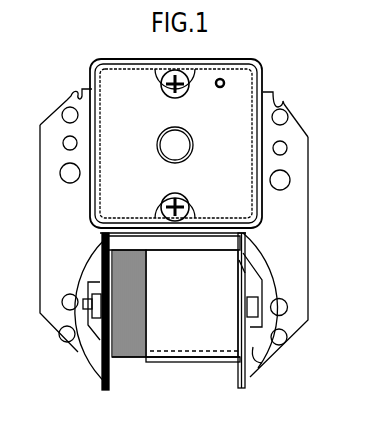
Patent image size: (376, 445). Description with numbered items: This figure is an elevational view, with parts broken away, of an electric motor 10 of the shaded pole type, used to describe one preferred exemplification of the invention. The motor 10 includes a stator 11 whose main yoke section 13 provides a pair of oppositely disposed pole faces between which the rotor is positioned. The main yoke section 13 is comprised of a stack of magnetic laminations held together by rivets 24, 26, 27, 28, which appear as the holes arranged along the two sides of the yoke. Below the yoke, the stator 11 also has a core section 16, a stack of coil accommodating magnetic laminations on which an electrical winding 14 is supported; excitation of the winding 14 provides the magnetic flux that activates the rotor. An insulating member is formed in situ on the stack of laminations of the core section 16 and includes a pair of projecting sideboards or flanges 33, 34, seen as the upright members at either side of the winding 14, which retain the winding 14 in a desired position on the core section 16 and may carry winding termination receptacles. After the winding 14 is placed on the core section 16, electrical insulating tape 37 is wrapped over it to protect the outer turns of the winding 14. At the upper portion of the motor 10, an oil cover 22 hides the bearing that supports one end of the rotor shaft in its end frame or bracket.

The electric motor 10 is at (49, 402).
The stator 11 is at (308, 203).
The main yoke section 13 is at (300, 143).
The electrical winding 14 is at (132, 362).
The core section 16 is at (255, 348).
The oil cover 22 is at (247, 76).
The rivet 24 is at (67, 109).
The rivet 26 is at (281, 117).
The rivet 27 is at (66, 335).
The rivet 28 is at (283, 337).
The flange 33 is at (106, 390).
The flange 34 is at (246, 390).
The electrical insulating tape 37 is at (190, 345).